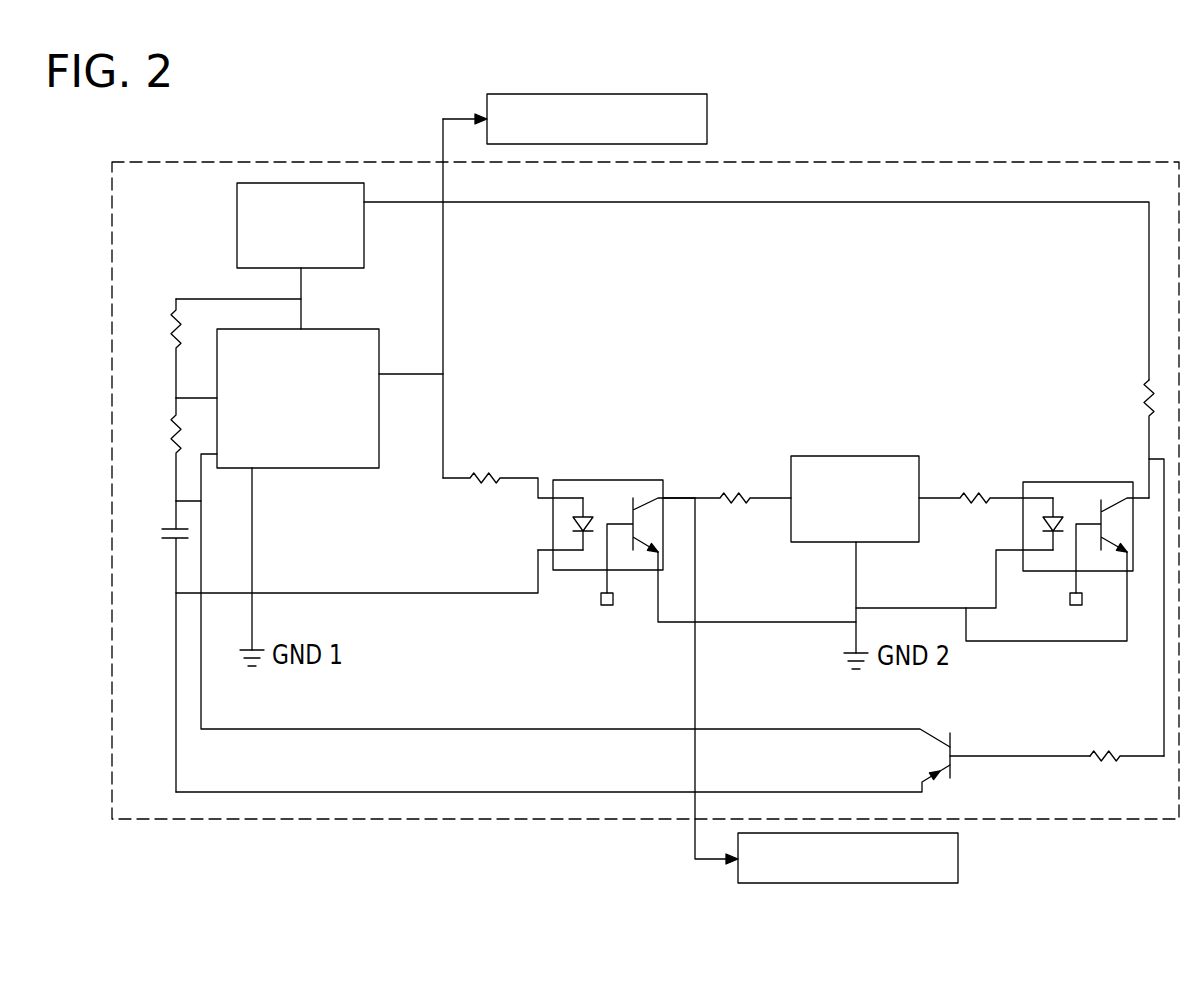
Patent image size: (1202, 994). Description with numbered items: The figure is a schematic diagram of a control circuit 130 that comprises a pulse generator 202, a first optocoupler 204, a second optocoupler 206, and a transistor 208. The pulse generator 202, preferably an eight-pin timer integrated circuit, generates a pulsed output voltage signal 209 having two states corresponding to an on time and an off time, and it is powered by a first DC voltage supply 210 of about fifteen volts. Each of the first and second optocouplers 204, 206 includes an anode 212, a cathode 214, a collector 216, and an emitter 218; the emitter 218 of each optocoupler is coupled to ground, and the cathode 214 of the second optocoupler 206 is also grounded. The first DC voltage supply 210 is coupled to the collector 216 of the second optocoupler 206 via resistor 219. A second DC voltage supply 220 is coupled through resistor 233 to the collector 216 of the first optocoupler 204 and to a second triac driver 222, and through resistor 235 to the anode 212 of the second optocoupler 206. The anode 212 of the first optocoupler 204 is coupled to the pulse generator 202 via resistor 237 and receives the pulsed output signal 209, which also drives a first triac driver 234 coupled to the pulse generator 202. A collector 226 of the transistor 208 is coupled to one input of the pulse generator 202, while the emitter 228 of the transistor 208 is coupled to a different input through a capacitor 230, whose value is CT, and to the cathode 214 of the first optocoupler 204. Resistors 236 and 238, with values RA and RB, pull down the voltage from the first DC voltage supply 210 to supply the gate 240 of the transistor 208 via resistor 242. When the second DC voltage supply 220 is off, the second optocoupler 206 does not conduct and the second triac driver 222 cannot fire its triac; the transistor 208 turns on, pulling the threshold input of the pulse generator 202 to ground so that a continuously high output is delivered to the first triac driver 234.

The control circuit 130 is at (863, 162).
The pulse generator 202 is at (317, 468).
The first optocoupler 204 is at (602, 480).
The second optocoupler 206 is at (1057, 481).
The transistor 208 is at (962, 734).
The pulsed output voltage signal 209 is at (443, 262).
The first DC voltage supply 210 is at (293, 183).
The anode 212 is at (583, 507).
The cathode 214 is at (583, 540).
The collector 216 is at (655, 497).
The emitter 218 is at (650, 545).
The resistor 219 is at (1147, 378).
The second DC voltage supply 220 is at (800, 456).
The second triac driver 222 is at (856, 883).
The collector 226 is at (360, 729).
The emitter 228 is at (403, 793).
The capacitor 230 is at (165, 540).
The resistor 233 is at (728, 500).
The first triac driver 234 is at (560, 94).
The resistor 235 is at (963, 500).
The resistor 236 is at (175, 348).
The resistor 237 is at (480, 482).
The resistor 238 is at (175, 447).
The gate 240 is at (975, 758).
The resistor 242 is at (1100, 760).